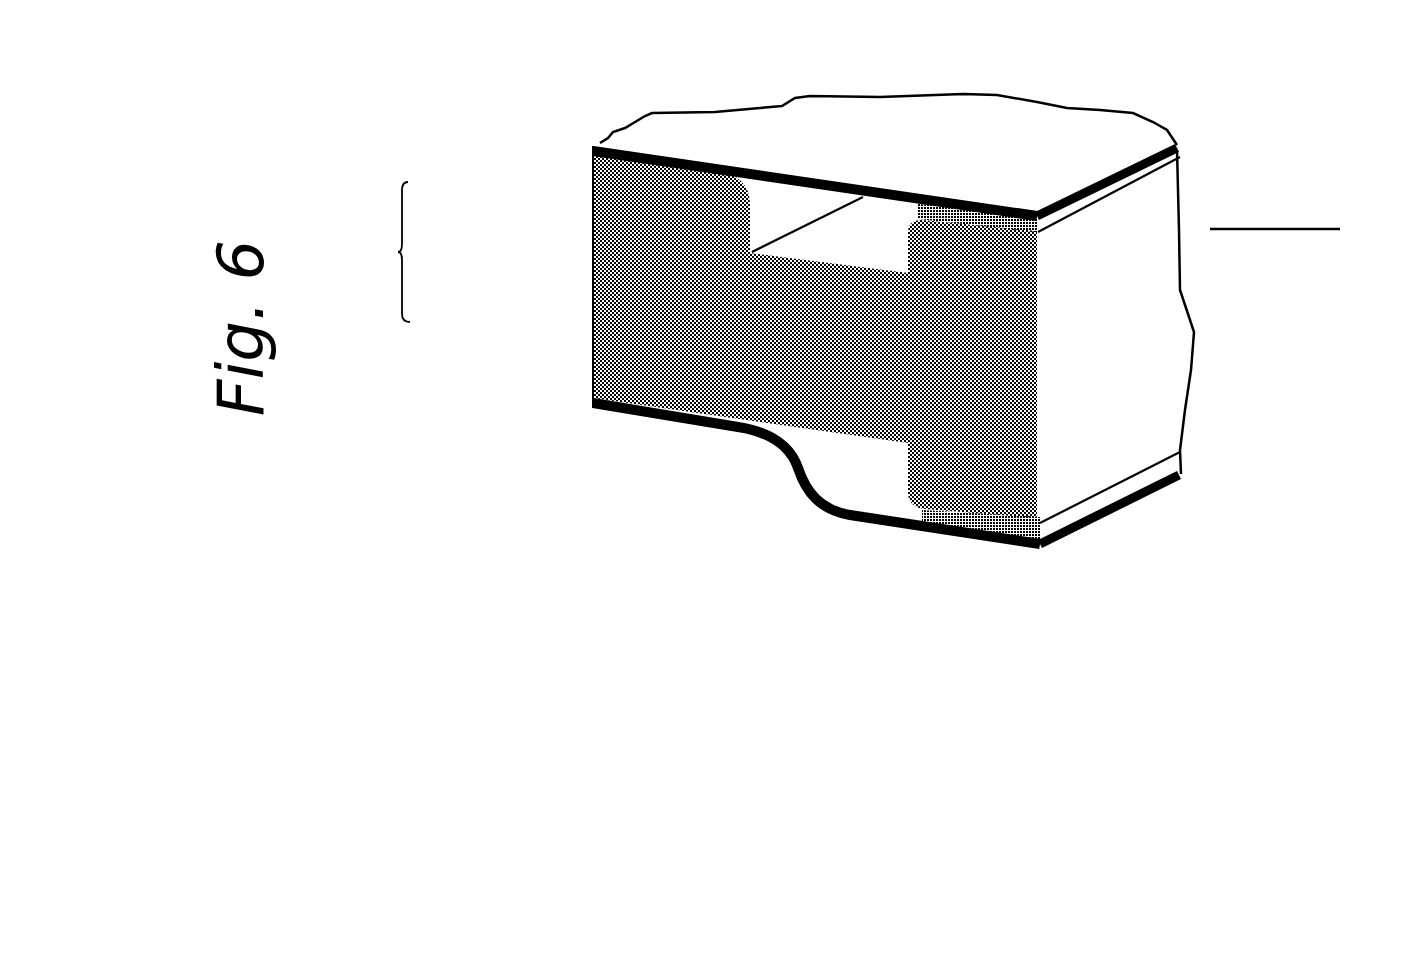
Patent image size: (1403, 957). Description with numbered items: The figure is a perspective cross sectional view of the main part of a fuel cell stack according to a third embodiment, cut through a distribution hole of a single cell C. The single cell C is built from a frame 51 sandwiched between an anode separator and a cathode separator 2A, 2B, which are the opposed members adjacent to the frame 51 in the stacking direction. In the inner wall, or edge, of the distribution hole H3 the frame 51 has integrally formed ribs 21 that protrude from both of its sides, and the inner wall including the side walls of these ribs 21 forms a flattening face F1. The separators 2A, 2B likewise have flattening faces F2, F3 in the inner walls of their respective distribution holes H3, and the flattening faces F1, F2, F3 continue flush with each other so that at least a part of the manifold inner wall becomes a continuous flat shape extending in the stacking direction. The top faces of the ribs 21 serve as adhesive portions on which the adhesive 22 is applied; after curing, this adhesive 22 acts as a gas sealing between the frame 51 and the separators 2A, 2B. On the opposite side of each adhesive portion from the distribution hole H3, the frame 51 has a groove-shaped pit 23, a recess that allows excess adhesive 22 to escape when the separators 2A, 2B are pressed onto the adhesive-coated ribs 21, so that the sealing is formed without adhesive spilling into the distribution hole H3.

The anode separator 2A is at (600, 143).
The cathode separator 2B is at (593, 400).
The frame 51 is at (607, 262).
The single cell C is at (390, 252).
The rib 21 is at (911, 217).
The adhesive 22 is at (1103, 185).
The pit 23 is at (842, 243).
The flattening face F1 is at (1157, 317).
The flattening face F2 is at (1179, 144).
The flattening face F3 is at (1181, 477).
The distribution hole H3 is at (1276, 209).